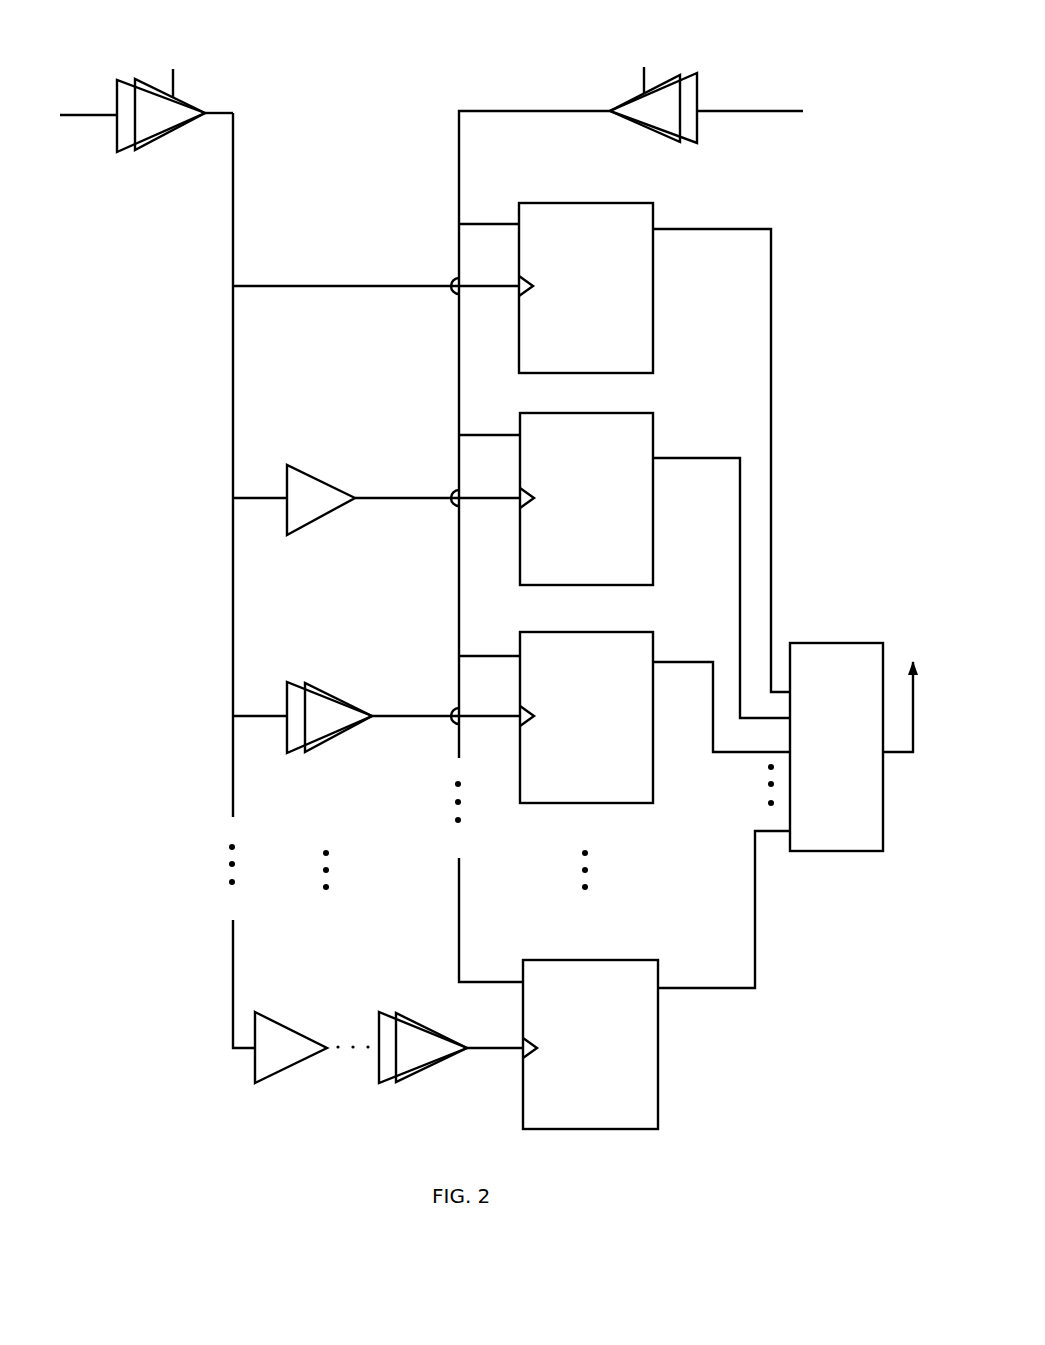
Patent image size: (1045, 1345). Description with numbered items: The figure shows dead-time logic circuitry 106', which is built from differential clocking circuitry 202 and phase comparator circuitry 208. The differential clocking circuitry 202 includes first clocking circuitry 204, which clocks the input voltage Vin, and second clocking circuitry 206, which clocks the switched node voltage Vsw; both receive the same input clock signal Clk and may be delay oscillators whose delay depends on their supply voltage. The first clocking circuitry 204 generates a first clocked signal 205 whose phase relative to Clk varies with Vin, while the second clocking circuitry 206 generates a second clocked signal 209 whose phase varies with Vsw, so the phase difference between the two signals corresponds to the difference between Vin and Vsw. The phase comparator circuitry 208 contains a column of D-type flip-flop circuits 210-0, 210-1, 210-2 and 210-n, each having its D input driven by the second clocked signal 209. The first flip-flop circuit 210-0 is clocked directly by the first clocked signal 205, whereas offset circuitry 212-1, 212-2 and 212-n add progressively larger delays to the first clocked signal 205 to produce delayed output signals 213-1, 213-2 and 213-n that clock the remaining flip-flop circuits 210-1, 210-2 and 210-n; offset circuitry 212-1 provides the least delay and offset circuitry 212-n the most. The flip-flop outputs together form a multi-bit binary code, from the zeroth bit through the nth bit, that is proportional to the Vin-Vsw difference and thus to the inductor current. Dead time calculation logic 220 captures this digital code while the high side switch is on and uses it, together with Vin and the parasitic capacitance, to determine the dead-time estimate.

The dead-time logic circuitry 106' is at (485, 595).
The differential clocking circuitry 202 is at (450, 105).
The first clocking circuitry 204 is at (148, 153).
The first clocked signal 205 is at (235, 195).
The second clocking circuitry 206 is at (687, 150).
The phase comparator circuitry 208 is at (192, 328).
The second clocked signal 209 is at (453, 180).
The flip-flop circuit 210-0 is at (630, 380).
The flip-flop circuit 210-1 is at (622, 592).
The flip-flop circuit 210-2 is at (615, 812).
The flip-flop circuit 210-n is at (618, 1140).
The offset circuitry 212-1 is at (305, 535).
The offset circuitry 212-2 is at (323, 748).
The offset circuitry 212-n is at (357, 1090).
The first delayed output signal 213-1 is at (420, 495).
The delayed output signal 213-2 is at (432, 707).
The delayed output signal 213-n is at (493, 1038).
The dead time calculation logic 220 is at (840, 747).